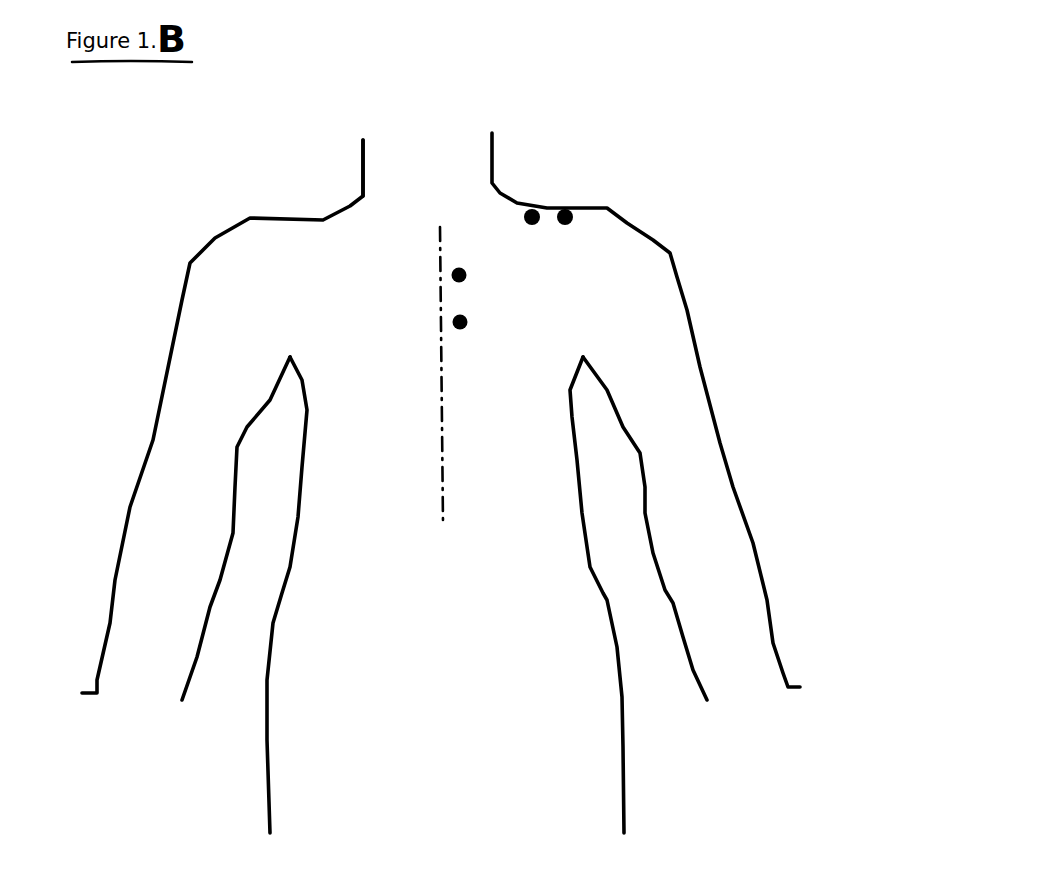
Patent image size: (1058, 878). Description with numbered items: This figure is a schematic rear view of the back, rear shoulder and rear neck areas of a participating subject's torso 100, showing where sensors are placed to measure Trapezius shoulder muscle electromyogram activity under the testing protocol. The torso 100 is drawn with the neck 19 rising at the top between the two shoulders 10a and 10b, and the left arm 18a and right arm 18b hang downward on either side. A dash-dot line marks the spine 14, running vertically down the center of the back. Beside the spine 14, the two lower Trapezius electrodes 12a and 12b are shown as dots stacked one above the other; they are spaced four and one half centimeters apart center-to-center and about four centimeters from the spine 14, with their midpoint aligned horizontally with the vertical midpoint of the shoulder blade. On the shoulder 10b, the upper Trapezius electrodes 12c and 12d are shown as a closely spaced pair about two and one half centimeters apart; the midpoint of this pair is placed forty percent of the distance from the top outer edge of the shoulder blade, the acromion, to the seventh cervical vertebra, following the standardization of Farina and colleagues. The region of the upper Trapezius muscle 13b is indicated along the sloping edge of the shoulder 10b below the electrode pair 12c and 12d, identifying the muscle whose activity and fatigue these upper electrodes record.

The torso 100 is at (263, 188).
The shoulder 10a is at (275, 215).
The shoulder 10b is at (620, 213).
The neck 19 is at (353, 152).
The left arm 18a is at (197, 445).
The right arm 18b is at (687, 450).
The region of the upper Trapezius muscle 13b is at (547, 220).
The spine 14 is at (443, 455).
The electrode 12a is at (473, 273).
The electrode 12b is at (485, 315).
The electrode 12c is at (540, 197).
The electrode 12d is at (580, 198).